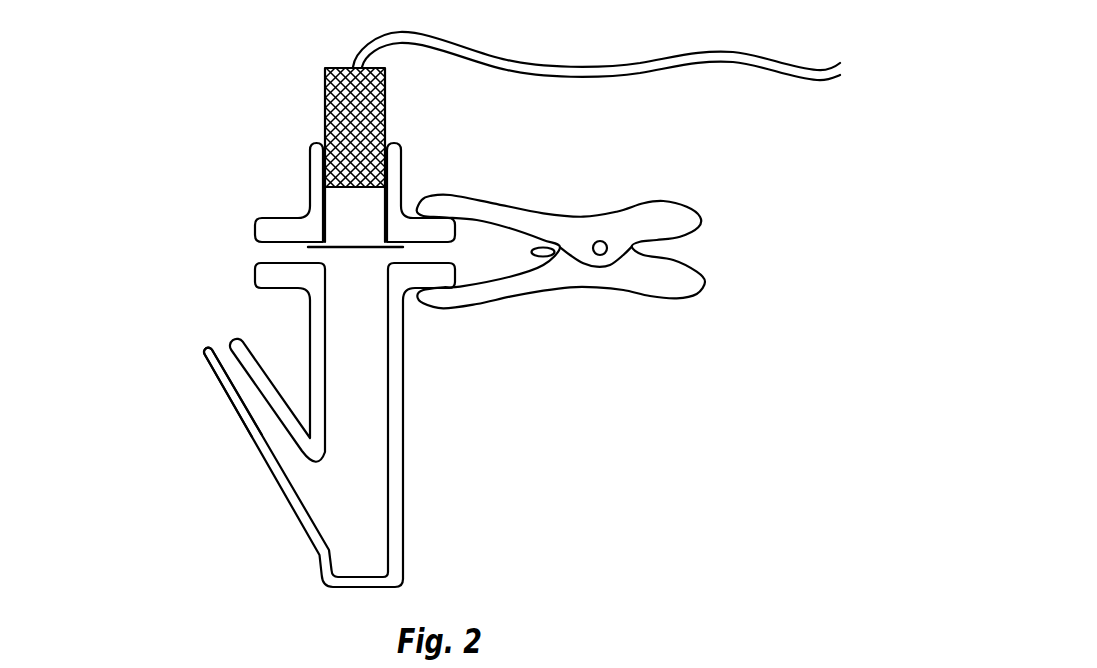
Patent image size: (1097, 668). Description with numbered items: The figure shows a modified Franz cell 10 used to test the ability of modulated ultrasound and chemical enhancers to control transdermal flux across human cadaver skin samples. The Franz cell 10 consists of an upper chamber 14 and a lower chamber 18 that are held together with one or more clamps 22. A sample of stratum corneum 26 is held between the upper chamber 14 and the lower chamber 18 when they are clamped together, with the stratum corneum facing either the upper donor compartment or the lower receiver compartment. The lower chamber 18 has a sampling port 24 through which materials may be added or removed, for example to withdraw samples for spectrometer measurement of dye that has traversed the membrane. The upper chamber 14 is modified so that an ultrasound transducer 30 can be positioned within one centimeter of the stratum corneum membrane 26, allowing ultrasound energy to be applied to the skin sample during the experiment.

The Franz cell 10 is at (145, 148).
The upper chamber 14 is at (310, 183).
The lower chamber 18 is at (403, 504).
The clamp 22 is at (642, 202).
The sampling port 24 is at (223, 357).
The stratum corneum 26 is at (309, 248).
The ultrasound transducer 30 is at (385, 110).